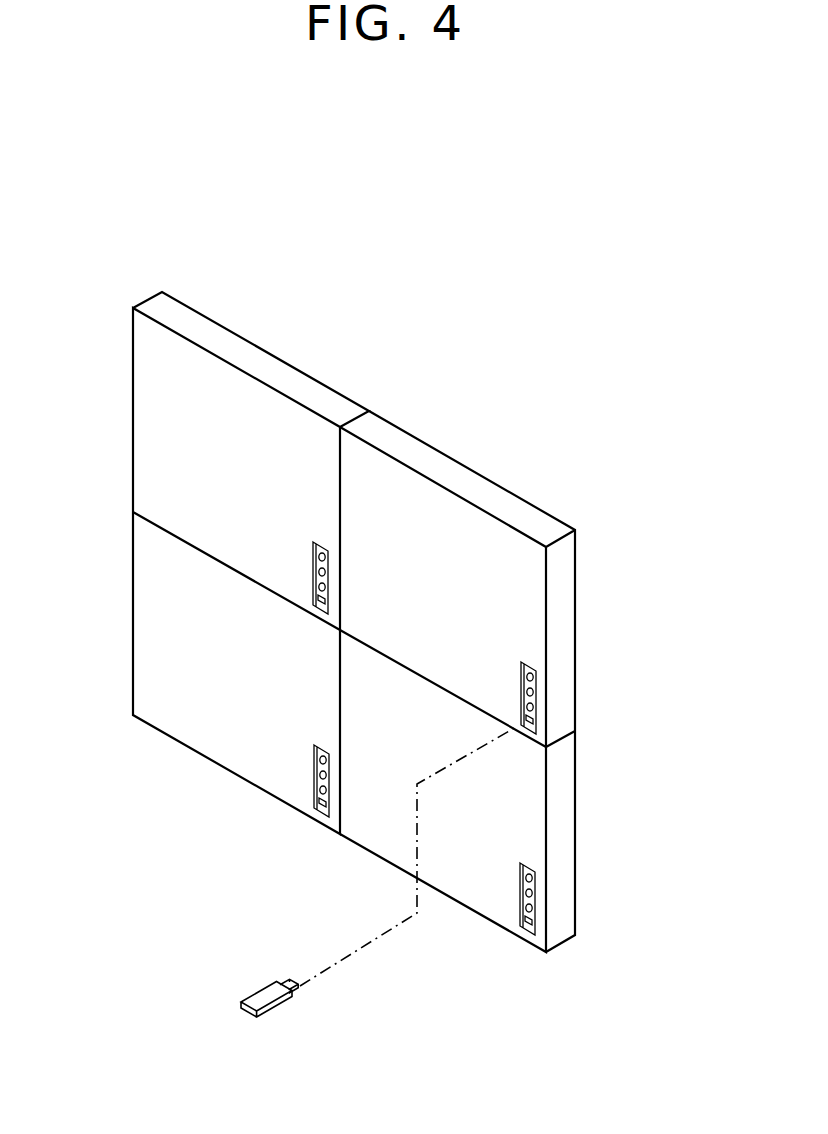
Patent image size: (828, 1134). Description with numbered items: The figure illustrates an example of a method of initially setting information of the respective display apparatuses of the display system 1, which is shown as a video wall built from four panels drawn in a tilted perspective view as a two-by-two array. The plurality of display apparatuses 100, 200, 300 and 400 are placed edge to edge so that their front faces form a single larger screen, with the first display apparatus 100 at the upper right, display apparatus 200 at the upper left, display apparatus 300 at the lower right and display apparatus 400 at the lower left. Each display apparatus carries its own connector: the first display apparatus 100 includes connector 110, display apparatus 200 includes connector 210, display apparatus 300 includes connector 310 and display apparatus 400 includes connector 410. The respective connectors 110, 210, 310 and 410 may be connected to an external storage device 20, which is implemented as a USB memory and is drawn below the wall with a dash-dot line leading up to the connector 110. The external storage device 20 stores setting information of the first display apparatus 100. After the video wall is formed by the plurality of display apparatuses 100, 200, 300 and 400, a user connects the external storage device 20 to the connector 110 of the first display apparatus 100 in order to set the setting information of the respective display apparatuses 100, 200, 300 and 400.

The display system 1 is at (500, 293).
The external storage device 20 is at (260, 1016).
The first display apparatus 100 is at (472, 475).
The connector 110 is at (537, 688).
The display apparatus 200 is at (272, 360).
The connector 210 is at (313, 558).
The display apparatus 300 is at (485, 907).
The connector 310 is at (537, 891).
The display apparatus 400 is at (185, 735).
The connector 410 is at (313, 812).